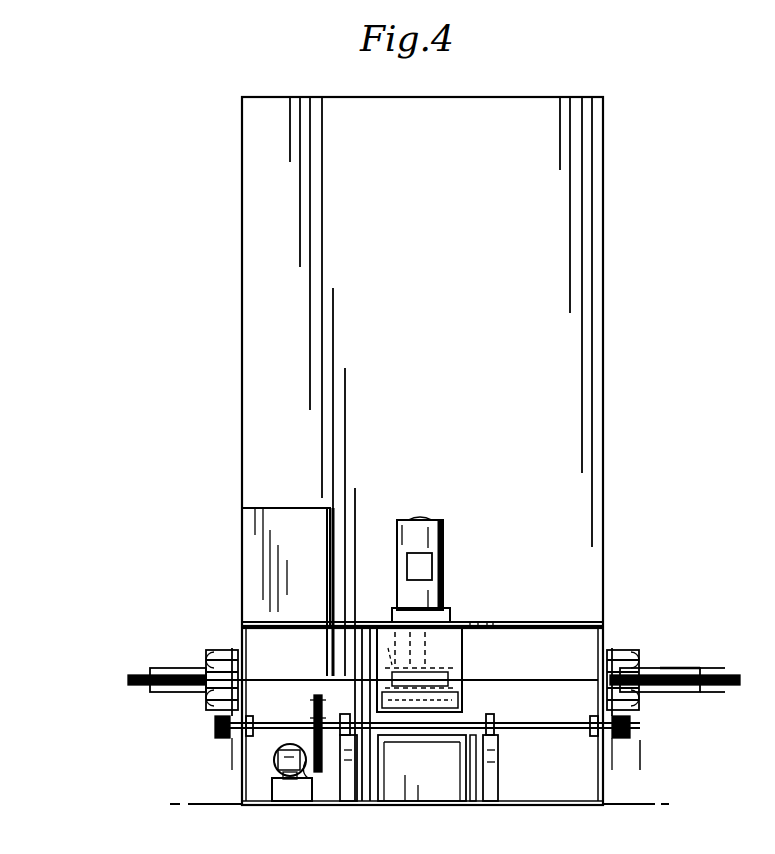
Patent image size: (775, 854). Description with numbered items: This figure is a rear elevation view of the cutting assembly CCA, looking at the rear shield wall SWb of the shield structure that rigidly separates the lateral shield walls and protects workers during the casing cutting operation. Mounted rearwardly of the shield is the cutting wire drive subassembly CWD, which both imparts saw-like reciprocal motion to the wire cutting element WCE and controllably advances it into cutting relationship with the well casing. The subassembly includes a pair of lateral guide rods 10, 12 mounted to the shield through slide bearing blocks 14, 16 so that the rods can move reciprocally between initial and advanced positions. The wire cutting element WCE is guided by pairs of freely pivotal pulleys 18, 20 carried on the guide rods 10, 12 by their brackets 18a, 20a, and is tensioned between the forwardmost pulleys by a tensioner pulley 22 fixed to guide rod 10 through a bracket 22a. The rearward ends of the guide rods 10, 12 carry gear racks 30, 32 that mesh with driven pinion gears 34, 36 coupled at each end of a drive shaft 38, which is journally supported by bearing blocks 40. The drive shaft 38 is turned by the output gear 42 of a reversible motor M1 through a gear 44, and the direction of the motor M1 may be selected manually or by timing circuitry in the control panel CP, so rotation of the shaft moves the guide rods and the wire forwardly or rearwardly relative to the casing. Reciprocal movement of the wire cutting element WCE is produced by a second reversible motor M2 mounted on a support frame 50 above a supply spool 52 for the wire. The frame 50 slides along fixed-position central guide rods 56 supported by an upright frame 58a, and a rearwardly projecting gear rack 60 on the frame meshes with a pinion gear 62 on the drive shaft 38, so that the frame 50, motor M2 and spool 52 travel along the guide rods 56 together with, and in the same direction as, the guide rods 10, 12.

The lateral guide rod 10 is at (629, 664).
The lateral guide rod 12 is at (206, 663).
The slide bearing block 14 is at (612, 648).
The slide bearing block 16 is at (225, 629).
The pulleys 18 is at (678, 692).
The bracket 18a is at (667, 668).
The pulleys 20 is at (133, 674).
The bracket 20a is at (160, 692).
The tensioner pulley 22 is at (735, 691).
The bracket 22a is at (708, 668).
The gear rack 30 is at (624, 712).
The gear rack 32 is at (216, 716).
The driven pinion gear 34 is at (632, 740).
The driven pinion gear 36 is at (222, 740).
The drive shaft 38 is at (553, 729).
The bearing blocks 40 is at (345, 720).
The output gear 42 is at (322, 775).
The gear 44 is at (313, 708).
The support frame 50 is at (462, 648).
The supply spool 52 is at (386, 646).
The central guide rods 56 is at (460, 707).
The upright frame 58a is at (380, 801).
The gear rack 60 is at (459, 678).
The pinion gear 62 is at (420, 745).
The reversible motor M1 is at (278, 768).
The reversible motor M2 is at (440, 523).
The control panel CP is at (315, 543).
The cutting wire drive subassembly CWD is at (467, 583).
The wire cutting element WCE is at (312, 678).
The rear shield wall SWb is at (450, 253).
The cutting assembly CCA is at (642, 399).